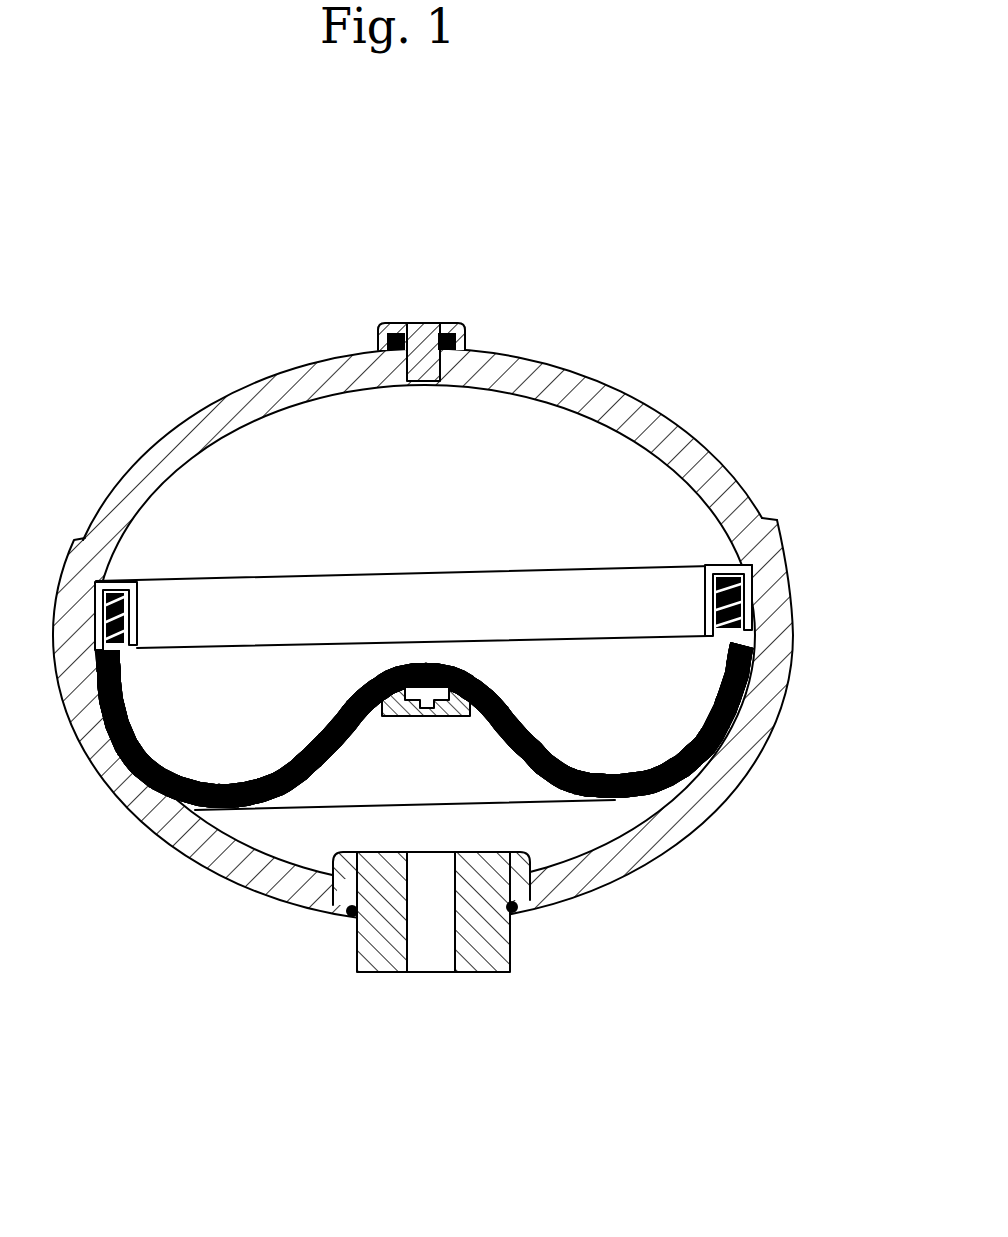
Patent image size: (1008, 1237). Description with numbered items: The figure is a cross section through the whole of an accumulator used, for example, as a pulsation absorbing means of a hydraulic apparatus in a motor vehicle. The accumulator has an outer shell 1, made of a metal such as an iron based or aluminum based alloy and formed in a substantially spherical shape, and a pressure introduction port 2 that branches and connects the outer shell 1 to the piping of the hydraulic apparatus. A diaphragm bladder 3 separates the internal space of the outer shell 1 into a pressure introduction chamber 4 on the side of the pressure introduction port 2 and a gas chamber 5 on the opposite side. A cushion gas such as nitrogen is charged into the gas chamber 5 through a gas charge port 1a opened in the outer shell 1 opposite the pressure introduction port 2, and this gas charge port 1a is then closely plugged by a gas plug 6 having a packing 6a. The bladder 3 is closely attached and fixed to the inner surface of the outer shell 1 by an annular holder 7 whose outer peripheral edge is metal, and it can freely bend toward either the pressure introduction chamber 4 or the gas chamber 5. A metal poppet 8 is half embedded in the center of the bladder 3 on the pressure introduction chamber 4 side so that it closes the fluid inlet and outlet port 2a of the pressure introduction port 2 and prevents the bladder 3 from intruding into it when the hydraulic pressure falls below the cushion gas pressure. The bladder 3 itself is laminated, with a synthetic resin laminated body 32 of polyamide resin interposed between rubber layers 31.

The outer shell 1 is at (653, 436).
The gas charge port 1a is at (420, 326).
The pressure introduction port 2 is at (473, 980).
The fluid inlet and outlet port 2a is at (436, 950).
The diaphragm bladder 3 is at (580, 738).
The pressure introduction chamber 4 is at (316, 826).
The gas chamber 5 is at (302, 503).
The gas plug 6 is at (424, 284).
The packing 6a is at (397, 327).
The annular holder 7 is at (704, 597).
The poppet 8 is at (430, 717).
The rubber layer 31 is at (215, 784).
The synthetic resin laminated body 32 is at (197, 802).